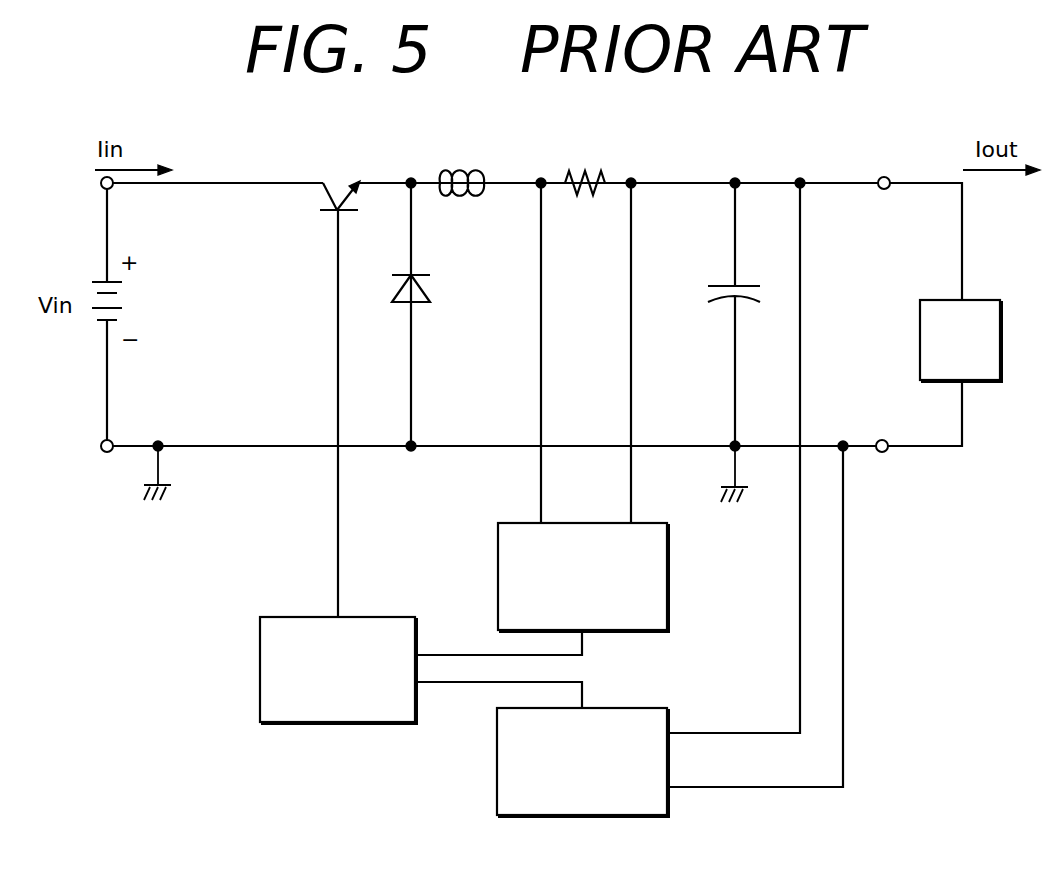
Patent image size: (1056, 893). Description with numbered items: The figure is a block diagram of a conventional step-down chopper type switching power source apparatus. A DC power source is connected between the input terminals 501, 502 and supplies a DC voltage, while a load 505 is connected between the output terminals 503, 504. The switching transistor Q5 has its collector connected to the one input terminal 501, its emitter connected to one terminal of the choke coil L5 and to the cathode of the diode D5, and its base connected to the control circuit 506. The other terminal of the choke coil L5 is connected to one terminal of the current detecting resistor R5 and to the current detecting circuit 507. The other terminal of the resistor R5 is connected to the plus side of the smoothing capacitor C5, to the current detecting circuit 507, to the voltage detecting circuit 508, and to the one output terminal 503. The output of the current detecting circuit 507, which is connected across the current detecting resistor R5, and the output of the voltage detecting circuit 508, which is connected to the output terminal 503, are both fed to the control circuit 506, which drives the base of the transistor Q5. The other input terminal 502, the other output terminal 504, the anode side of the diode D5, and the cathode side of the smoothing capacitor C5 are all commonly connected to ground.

The input terminal 501 is at (101, 188).
The input terminal 502 is at (102, 441).
The output terminal 503 is at (890, 177).
The output terminal 504 is at (885, 453).
The load 505 is at (982, 292).
The control circuit 506 is at (295, 614).
The current detecting circuit 507 is at (521, 522).
The voltage detecting circuit 508 is at (536, 818).
The switching transistor Q5 is at (340, 383).
The diode D5 is at (433, 314).
The choke coil L5 is at (462, 164).
The current detecting resistor R5 is at (586, 165).
The smoothing capacitor C5 is at (739, 312).